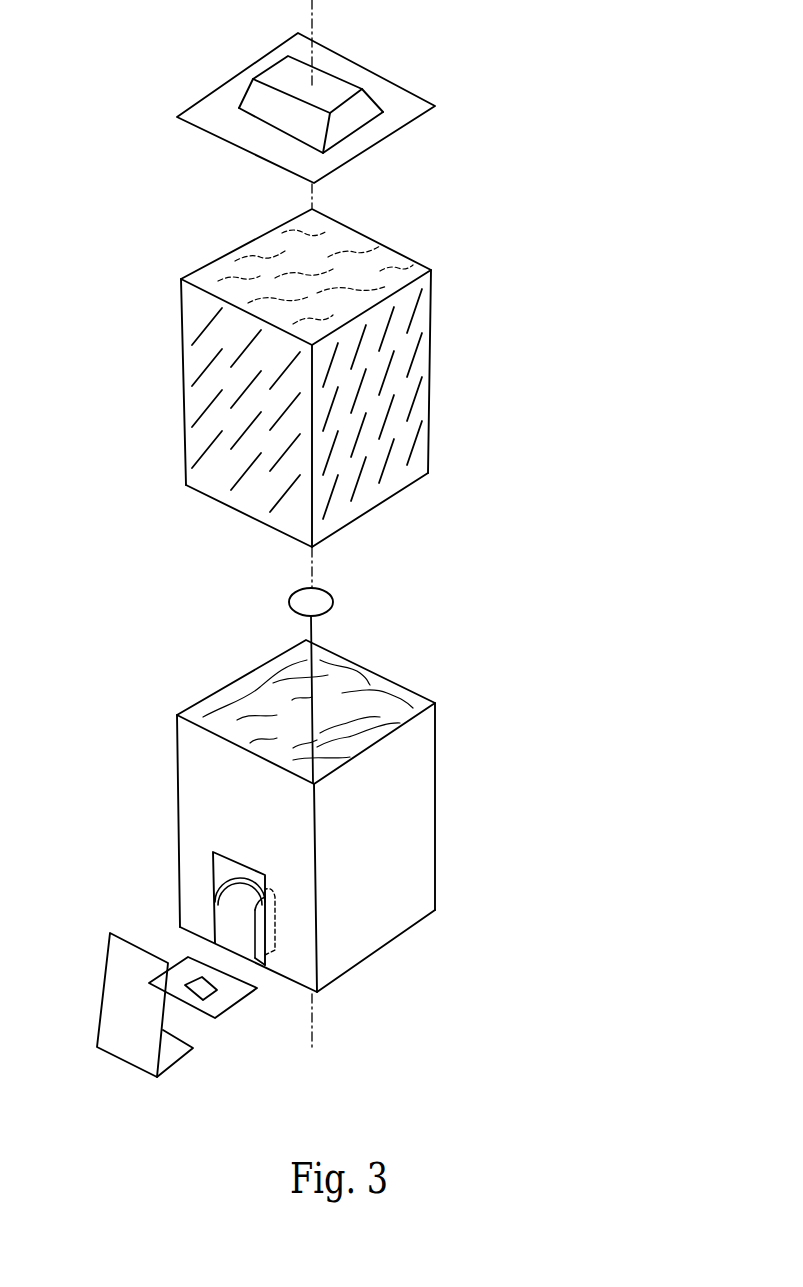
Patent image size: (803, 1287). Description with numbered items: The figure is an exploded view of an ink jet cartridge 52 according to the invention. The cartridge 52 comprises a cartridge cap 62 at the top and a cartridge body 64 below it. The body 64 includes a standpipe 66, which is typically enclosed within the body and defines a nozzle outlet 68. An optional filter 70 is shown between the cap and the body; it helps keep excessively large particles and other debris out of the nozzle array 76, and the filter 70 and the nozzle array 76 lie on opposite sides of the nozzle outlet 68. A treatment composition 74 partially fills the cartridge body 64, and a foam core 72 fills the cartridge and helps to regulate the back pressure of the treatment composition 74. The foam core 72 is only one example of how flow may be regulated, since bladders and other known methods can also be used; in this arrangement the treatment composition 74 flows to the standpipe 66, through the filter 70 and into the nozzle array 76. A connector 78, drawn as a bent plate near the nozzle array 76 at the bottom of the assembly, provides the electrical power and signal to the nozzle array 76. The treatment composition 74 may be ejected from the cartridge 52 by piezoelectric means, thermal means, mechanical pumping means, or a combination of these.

The cartridge 52 is at (552, 7).
The cartridge cap 62 is at (398, 82).
The cartridge body 64 is at (437, 752).
The standpipe 66 is at (262, 890).
The nozzle outlet 68 is at (240, 943).
The filter 70 is at (334, 601).
The foam core 72 is at (428, 365).
The treatment composition 74 is at (365, 712).
The nozzle array 76 is at (240, 1000).
The connector 78 is at (178, 1063).